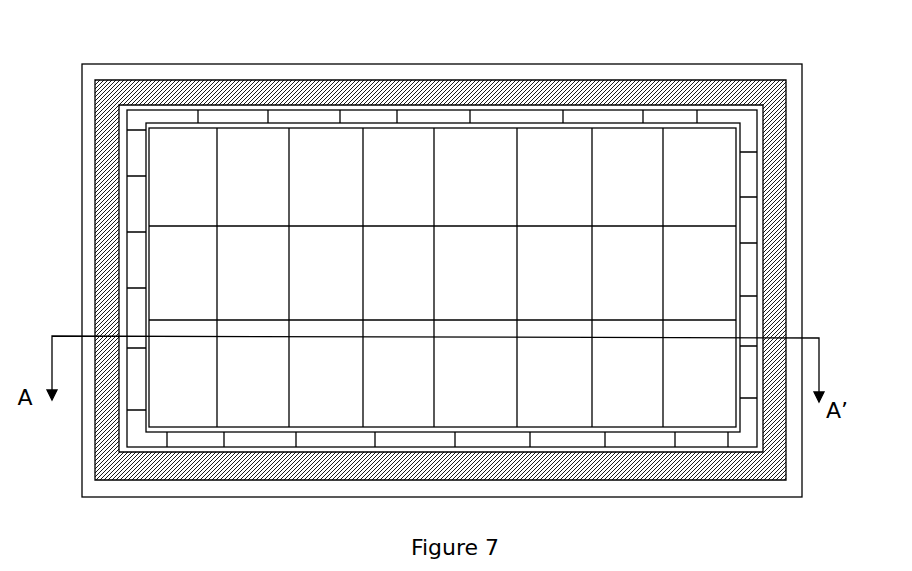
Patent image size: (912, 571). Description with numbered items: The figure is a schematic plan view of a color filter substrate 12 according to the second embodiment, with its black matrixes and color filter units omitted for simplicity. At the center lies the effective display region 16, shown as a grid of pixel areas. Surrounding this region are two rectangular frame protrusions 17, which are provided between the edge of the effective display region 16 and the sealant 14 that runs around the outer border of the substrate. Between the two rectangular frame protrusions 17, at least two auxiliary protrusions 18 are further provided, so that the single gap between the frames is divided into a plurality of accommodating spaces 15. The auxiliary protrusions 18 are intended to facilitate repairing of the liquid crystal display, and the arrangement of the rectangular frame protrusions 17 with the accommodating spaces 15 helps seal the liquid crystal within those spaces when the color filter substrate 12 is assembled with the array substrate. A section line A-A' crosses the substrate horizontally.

The color filter substrate 12 is at (801, 218).
The sealant 14 is at (776, 107).
The accommodating space 15 is at (295, 118).
The effective display region 16 is at (692, 312).
The rectangular frame protrusion 17 is at (759, 170).
The auxiliary protrusion 18 is at (340, 123).